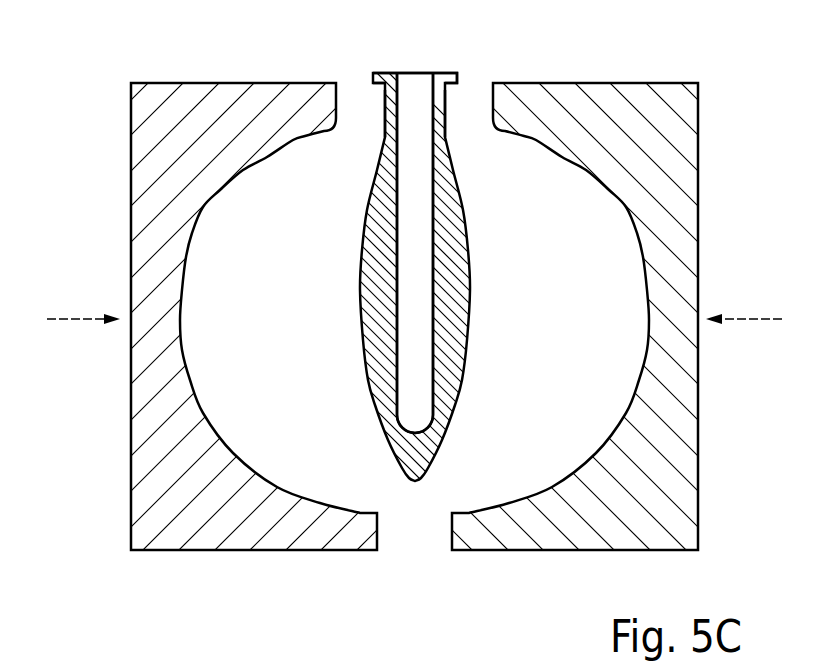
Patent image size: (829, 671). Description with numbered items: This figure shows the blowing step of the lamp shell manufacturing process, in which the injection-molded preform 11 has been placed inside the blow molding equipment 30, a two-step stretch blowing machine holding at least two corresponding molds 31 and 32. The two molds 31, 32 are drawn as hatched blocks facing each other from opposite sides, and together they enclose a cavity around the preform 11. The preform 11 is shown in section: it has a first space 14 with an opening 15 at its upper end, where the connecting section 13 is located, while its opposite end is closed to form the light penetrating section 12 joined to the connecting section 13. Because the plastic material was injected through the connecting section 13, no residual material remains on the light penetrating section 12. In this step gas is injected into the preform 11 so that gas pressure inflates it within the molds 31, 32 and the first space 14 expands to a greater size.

The preform 11 is at (405, 258).
The light penetrating section 12 is at (452, 303).
The connecting section 13 is at (445, 108).
The first space 14 is at (402, 282).
The opening 15 is at (402, 72).
The blow molding equipment 30 is at (414, 363).
The mold 31 is at (377, 533).
The mold 32 is at (382, 597).